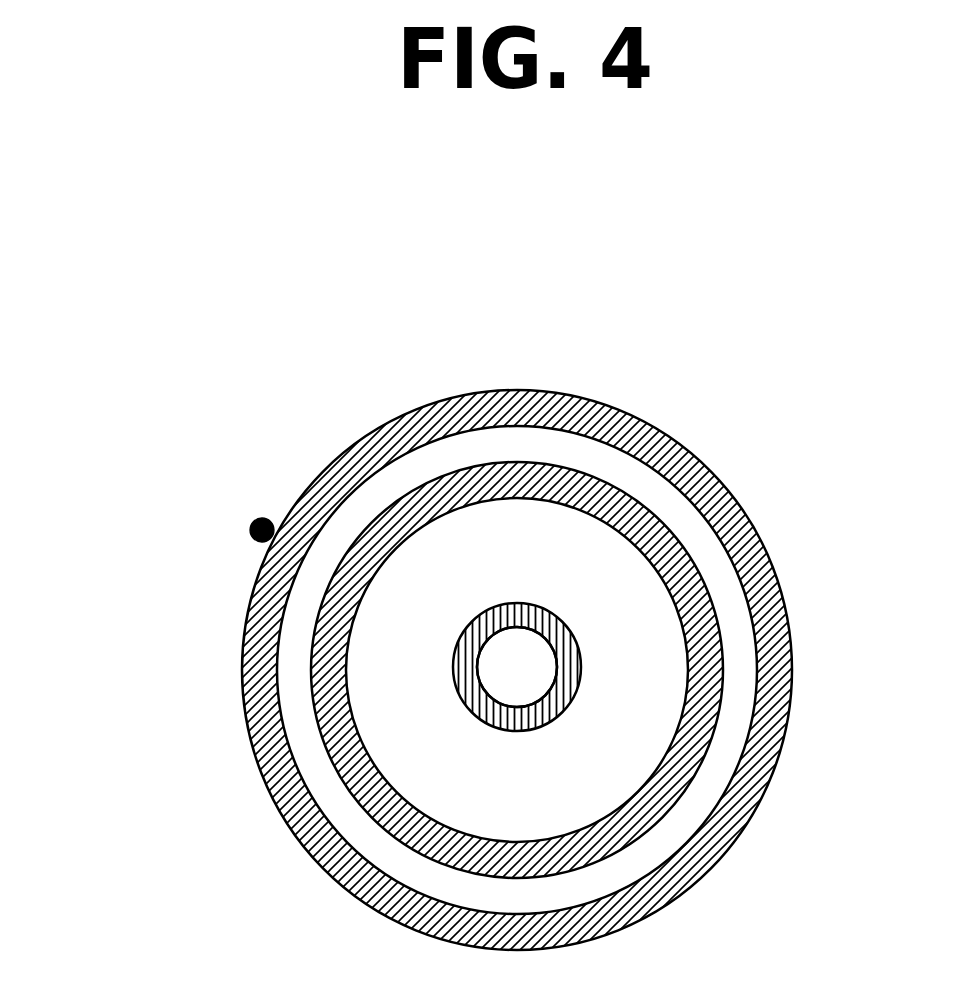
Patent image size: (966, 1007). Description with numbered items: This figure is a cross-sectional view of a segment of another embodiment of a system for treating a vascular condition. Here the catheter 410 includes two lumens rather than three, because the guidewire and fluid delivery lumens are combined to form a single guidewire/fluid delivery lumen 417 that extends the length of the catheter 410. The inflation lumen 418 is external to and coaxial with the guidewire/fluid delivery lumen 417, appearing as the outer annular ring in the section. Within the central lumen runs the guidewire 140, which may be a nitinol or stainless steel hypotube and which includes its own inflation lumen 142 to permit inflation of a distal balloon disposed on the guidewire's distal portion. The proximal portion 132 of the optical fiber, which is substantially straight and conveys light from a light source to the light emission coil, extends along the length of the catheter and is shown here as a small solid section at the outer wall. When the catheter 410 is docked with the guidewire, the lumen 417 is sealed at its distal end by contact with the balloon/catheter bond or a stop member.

The catheter 410 is at (313, 390).
The inflation lumen 418 is at (298, 677).
The guidewire/fluid delivery lumen 417 is at (445, 633).
The guidewire 140 is at (575, 637).
The inflation lumen 142 is at (527, 682).
The proximal portion of the optical fiber 132 is at (255, 527).